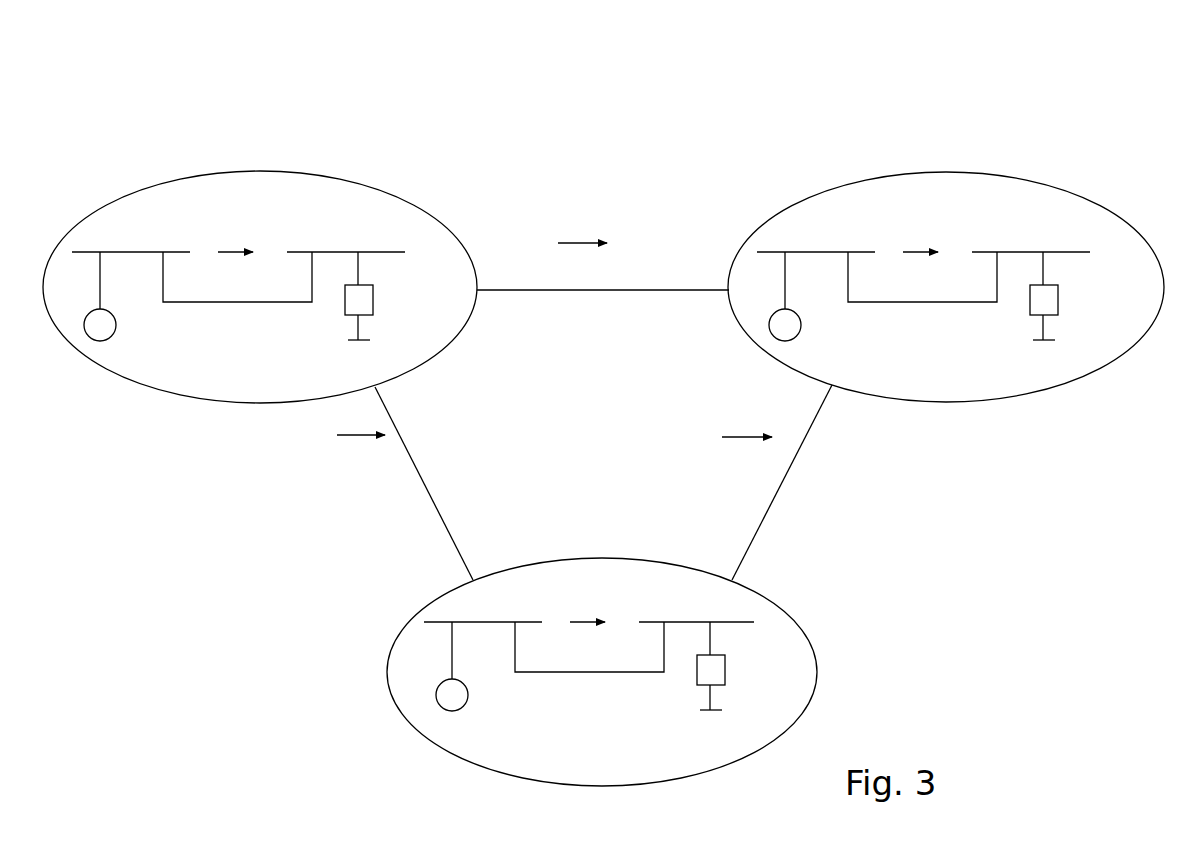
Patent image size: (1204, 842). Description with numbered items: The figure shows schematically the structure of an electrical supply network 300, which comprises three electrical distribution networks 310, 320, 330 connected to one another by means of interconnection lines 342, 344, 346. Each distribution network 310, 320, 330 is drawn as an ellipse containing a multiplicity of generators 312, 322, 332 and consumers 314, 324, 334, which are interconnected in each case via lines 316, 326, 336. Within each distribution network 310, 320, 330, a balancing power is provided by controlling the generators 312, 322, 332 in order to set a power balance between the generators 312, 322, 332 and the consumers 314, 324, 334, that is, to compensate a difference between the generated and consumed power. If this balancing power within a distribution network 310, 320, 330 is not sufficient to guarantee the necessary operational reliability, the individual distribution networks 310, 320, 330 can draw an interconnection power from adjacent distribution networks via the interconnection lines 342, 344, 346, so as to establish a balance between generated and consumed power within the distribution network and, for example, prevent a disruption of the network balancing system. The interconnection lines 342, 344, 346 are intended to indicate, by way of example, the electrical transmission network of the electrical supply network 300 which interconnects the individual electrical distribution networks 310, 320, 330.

The electrical supply network 300 is at (978, 101).
The electrical distribution network 310 is at (380, 165).
The generators 312 is at (117, 327).
The consumers 314 is at (373, 305).
The lines 316 is at (248, 302).
The electrical distribution network 320 is at (1068, 165).
The generators 322 is at (838, 302).
The consumers 324 is at (1086, 296).
The lines 326 is at (922, 316).
The electrical distribution network 330 is at (808, 593).
The generators 332 is at (505, 672).
The consumers 334 is at (753, 666).
The lines 336 is at (589, 686).
The interconnection line 342 is at (665, 290).
The interconnection line 344 is at (418, 470).
The interconnection line 346 is at (788, 473).